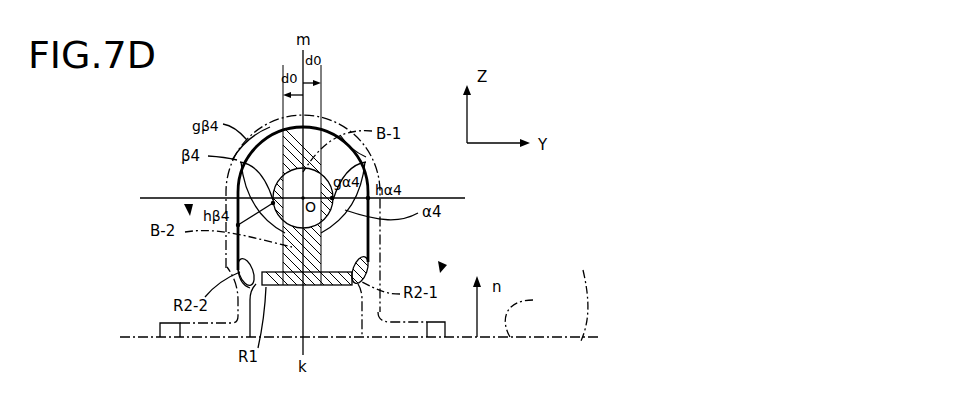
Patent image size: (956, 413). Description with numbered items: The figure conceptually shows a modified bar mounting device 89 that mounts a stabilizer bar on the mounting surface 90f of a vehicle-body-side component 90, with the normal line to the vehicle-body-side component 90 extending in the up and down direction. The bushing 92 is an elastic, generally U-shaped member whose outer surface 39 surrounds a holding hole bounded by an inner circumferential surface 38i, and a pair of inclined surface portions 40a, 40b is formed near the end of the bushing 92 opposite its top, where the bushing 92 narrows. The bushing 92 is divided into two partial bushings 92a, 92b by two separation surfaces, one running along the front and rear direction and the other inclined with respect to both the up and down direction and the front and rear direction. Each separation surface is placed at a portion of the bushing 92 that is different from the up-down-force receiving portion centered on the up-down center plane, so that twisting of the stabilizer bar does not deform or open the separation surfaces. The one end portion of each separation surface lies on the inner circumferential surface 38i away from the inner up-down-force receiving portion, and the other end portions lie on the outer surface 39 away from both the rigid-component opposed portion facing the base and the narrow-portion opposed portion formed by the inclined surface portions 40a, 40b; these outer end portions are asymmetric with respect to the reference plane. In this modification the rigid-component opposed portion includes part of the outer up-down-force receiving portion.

The outer surface 39 is at (270, 130).
The bushing 92 is at (334, 124).
The partial bushing 92a is at (243, 271).
The partial bushing 92b is at (366, 157).
The inclined surface portion 40a is at (328, 287).
The inclined surface portion 40b is at (242, 264).
The inner circumferential surface 38i is at (369, 205).
The bar mounting device 89 is at (189, 208).
The vehicle-body-side component 90 is at (589, 297).
The mounting surface 90f is at (534, 313).